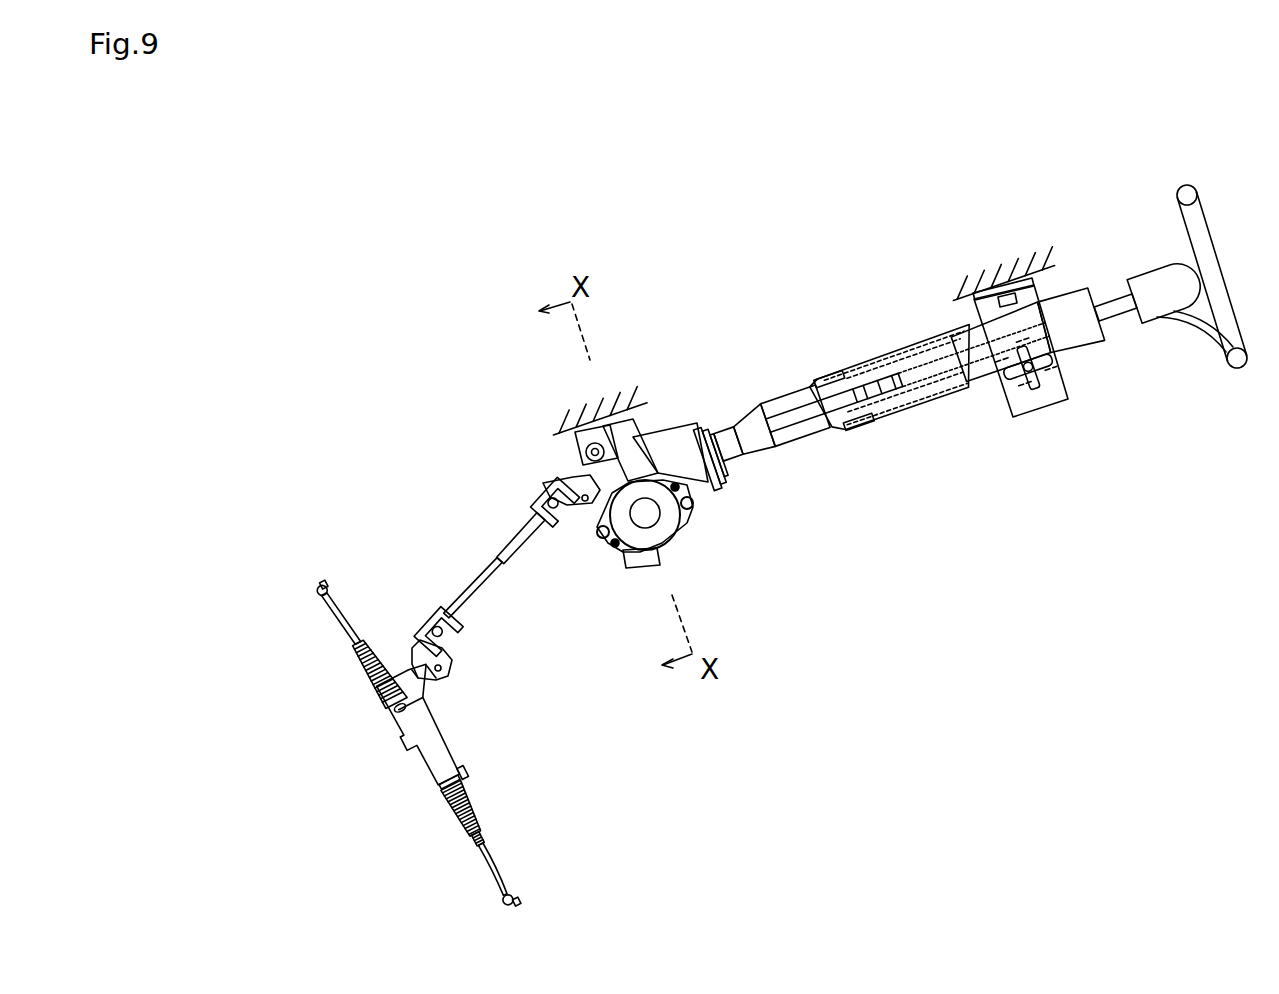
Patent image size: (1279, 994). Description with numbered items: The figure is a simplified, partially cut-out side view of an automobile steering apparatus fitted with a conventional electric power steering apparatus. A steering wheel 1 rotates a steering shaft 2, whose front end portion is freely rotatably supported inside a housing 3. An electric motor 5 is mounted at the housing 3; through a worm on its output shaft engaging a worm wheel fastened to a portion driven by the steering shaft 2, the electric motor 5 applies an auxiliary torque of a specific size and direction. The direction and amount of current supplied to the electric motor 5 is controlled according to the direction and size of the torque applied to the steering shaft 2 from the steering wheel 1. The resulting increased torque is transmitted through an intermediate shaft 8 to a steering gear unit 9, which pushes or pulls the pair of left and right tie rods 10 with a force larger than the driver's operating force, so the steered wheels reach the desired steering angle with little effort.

The steering wheel 1 is at (1200, 213).
The steering shaft 2 is at (815, 410).
The housing 3 is at (697, 467).
The electric motor 5 is at (628, 532).
The intermediate shaft 8 is at (513, 550).
The steering gear unit 9 is at (428, 758).
The tie rods 10 is at (350, 615).